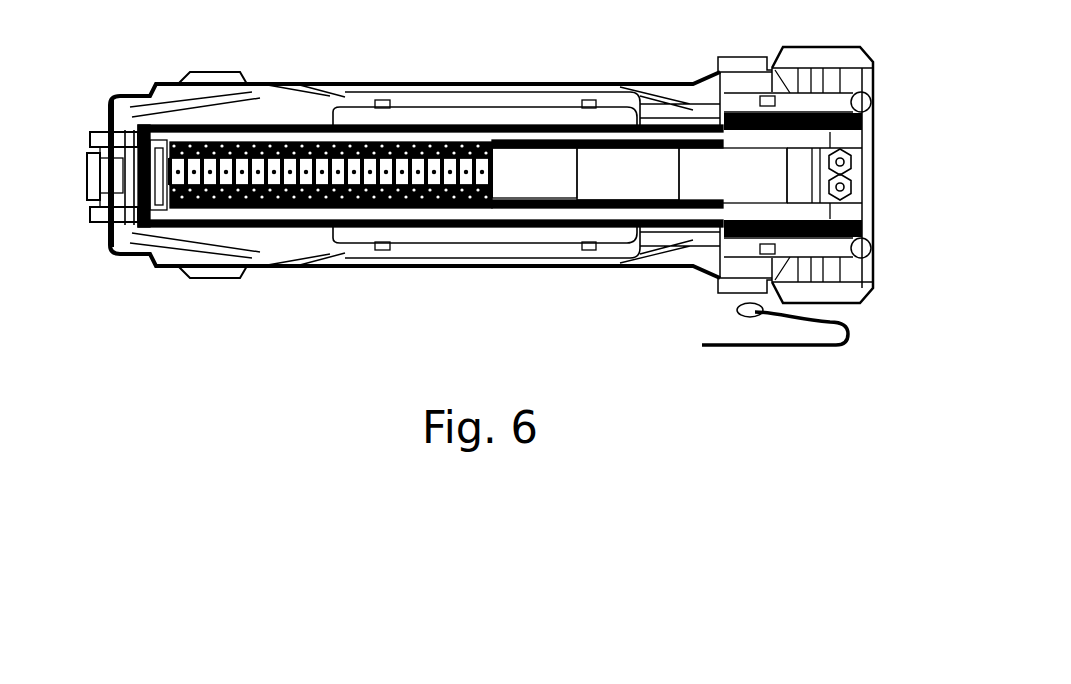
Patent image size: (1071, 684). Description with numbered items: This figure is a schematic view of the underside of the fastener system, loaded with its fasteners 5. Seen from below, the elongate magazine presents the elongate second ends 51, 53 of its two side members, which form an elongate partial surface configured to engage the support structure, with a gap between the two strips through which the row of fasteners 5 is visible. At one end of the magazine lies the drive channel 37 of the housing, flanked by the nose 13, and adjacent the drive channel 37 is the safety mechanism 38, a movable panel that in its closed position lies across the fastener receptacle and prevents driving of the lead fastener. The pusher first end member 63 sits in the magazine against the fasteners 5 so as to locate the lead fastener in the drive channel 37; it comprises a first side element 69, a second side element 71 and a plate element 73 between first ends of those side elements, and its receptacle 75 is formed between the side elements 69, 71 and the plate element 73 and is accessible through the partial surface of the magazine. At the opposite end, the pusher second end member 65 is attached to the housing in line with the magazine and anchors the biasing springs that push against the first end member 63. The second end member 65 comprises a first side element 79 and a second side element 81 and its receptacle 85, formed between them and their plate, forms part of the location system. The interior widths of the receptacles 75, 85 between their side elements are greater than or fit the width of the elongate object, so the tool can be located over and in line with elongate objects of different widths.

The fasteners 5 is at (383, 172).
The nose 13 is at (83, 191).
The drive channel 37 is at (158, 188).
The safety mechanism 38 is at (135, 128).
The elongate second end of first side member 51 is at (311, 210).
The elongate second end of second side member 53 is at (295, 135).
The first end member 63 is at (563, 184).
The second end member 65 is at (860, 184).
The first side element 69 is at (562, 207).
The second side element 71 is at (560, 147).
The plate element 73 is at (497, 170).
The receptacle 75 is at (514, 189).
The first side element 79 is at (700, 208).
The second side element 81 is at (702, 143).
The receptacle 85 is at (712, 189).